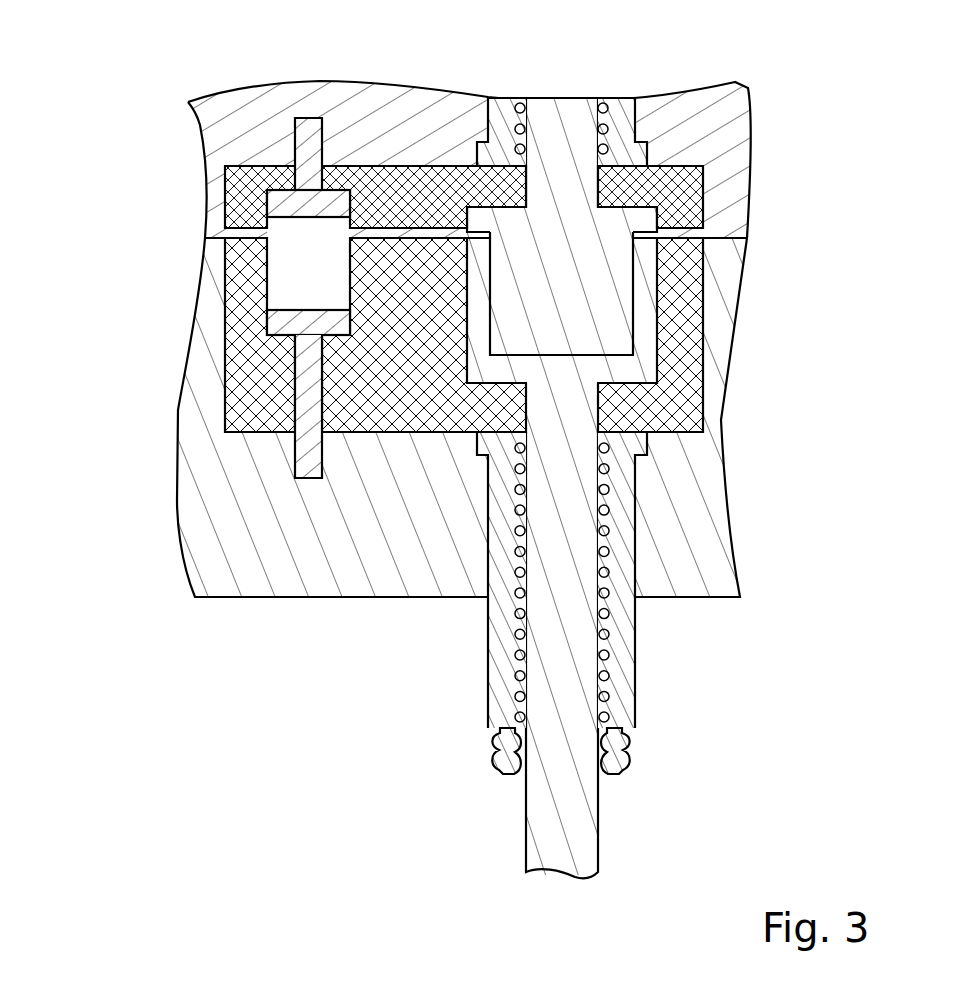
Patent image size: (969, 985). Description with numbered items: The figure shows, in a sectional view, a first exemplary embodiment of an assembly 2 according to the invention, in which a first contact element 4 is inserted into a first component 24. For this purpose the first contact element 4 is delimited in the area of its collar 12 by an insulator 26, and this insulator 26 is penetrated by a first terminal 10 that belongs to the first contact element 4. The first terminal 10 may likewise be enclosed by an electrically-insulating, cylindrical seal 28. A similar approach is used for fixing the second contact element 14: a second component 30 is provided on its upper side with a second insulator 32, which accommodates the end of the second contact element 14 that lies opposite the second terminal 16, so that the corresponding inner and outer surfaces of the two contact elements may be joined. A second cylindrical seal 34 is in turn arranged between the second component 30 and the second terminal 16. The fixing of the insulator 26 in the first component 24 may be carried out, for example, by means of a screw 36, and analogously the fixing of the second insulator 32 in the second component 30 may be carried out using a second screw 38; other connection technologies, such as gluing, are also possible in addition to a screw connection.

The assembly 2 is at (130, 369).
The first contact element 4 is at (568, 303).
The first terminal 10 is at (562, 126).
The collar 12 is at (703, 213).
The second contact element 14 is at (637, 358).
The second terminal 16 is at (565, 829).
The first component 24 is at (700, 123).
The insulator 26 is at (403, 166).
The cylindrical seal 28 is at (500, 132).
The second component 30 is at (685, 513).
The second insulator 32 is at (385, 380).
The second cylindrical seal 34 is at (624, 667).
The screw 36 is at (308, 137).
The second screw 38 is at (308, 457).